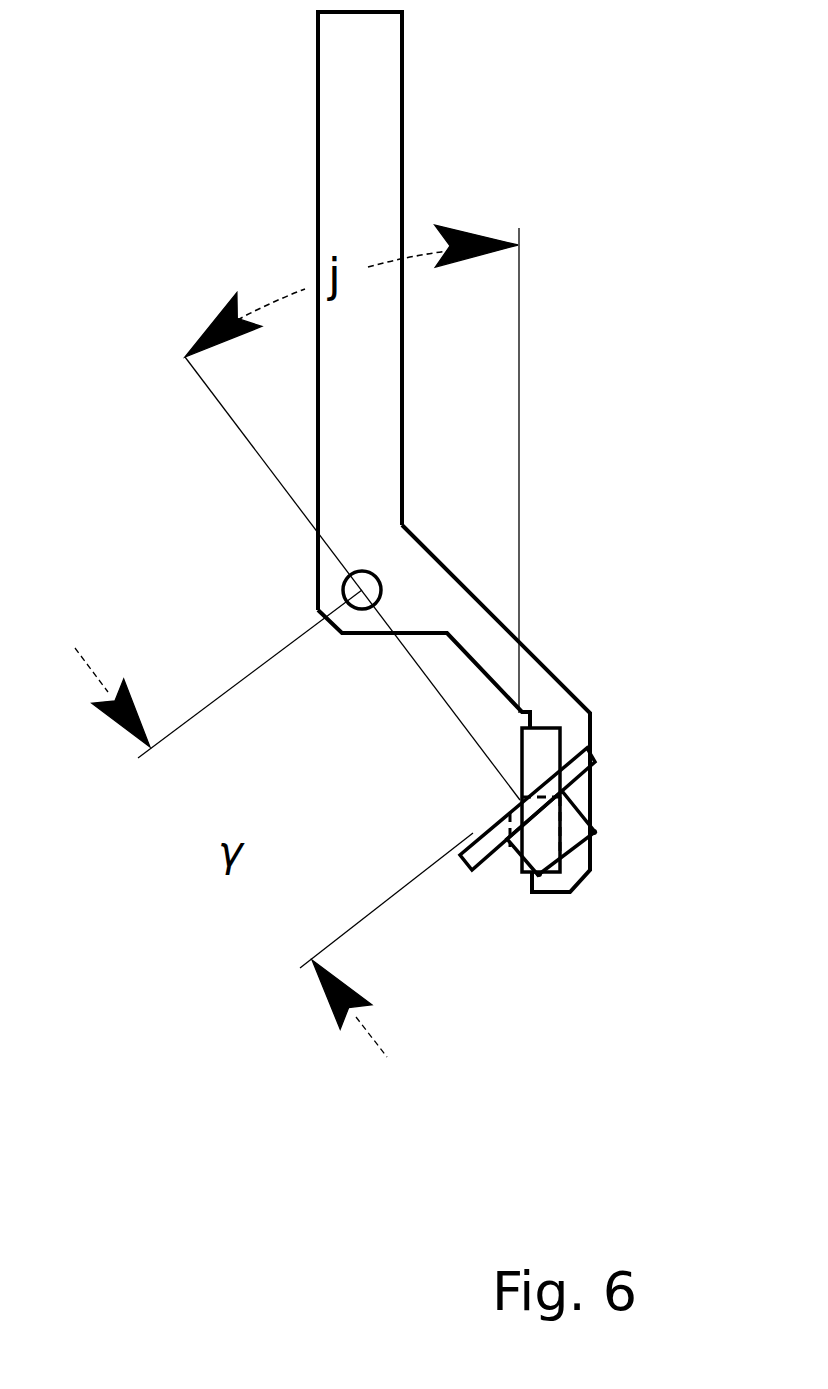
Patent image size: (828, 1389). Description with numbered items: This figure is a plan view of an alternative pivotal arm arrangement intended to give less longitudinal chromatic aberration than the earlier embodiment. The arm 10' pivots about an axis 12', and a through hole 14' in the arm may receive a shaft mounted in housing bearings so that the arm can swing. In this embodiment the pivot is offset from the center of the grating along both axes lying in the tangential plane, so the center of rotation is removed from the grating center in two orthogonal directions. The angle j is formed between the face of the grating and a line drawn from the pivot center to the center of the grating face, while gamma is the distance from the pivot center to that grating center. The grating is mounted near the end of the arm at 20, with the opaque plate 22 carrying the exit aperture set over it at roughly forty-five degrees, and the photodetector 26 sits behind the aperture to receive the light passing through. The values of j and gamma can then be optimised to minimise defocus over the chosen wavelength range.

The arm 10' is at (465, 311).
The axis 12' is at (440, 708).
The through hole 14' is at (252, 571).
The cutting insert 20 is at (523, 872).
The plate 22 is at (595, 762).
The photodetector 26 is at (567, 857).